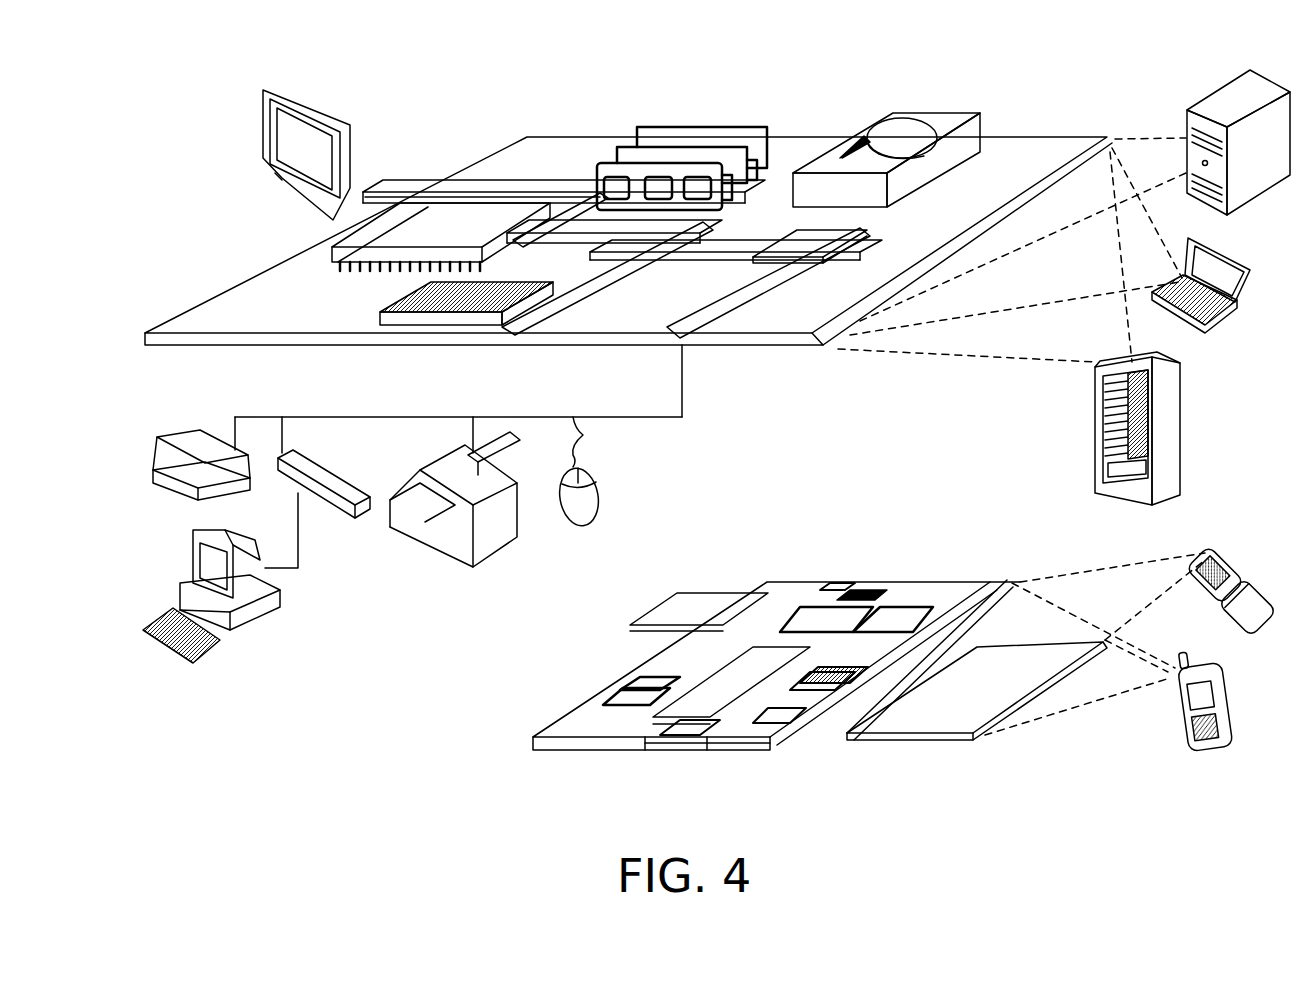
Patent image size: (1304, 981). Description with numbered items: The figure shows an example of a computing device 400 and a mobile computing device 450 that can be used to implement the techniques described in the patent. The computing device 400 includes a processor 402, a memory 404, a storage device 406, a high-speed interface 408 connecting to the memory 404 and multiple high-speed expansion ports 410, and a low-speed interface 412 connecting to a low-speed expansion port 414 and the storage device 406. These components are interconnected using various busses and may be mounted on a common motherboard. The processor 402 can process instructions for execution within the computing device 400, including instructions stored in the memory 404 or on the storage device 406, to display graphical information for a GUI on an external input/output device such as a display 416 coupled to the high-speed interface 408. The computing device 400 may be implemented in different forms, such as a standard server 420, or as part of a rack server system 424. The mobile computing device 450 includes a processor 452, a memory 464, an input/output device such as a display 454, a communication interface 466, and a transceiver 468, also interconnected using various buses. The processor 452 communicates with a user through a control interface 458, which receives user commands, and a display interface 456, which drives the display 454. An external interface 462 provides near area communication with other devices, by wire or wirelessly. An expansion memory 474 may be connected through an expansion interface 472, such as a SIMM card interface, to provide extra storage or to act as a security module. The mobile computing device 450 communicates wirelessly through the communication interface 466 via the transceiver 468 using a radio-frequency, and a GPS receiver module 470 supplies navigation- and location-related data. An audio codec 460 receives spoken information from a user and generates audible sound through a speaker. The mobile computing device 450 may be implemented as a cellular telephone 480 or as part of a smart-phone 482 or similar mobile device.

The computing device 400 is at (455, 108).
The processor 402 is at (320, 254).
The memory 404 is at (647, 128).
The storage device 406 is at (876, 117).
The high-speed interface 408 is at (559, 190).
The high-speed expansion ports 410 is at (383, 305).
The low-speed interface 412 is at (783, 230).
The low-speed expansion port 414 is at (707, 336).
The display 416 is at (263, 90).
The standard server 420 is at (1188, 129).
The rack server system 424 is at (1095, 450).
The mobile computing device 450 is at (510, 749).
The processor 452 is at (693, 743).
The display 454 is at (937, 723).
The display interface 456 is at (778, 745).
The control interface 458 is at (814, 725).
The audio codec 460 is at (830, 710).
The external interface 462 is at (670, 745).
The memory 464 is at (620, 703).
The communication interface 466 is at (814, 606).
The transceiver 468 is at (897, 617).
The GPS receiver module 470 is at (868, 583).
The expansion interface 472 is at (750, 590).
The expansion memory 474 is at (688, 591).
The cellular telephone 480 is at (1226, 542).
The smart-phone 482 is at (1176, 710).